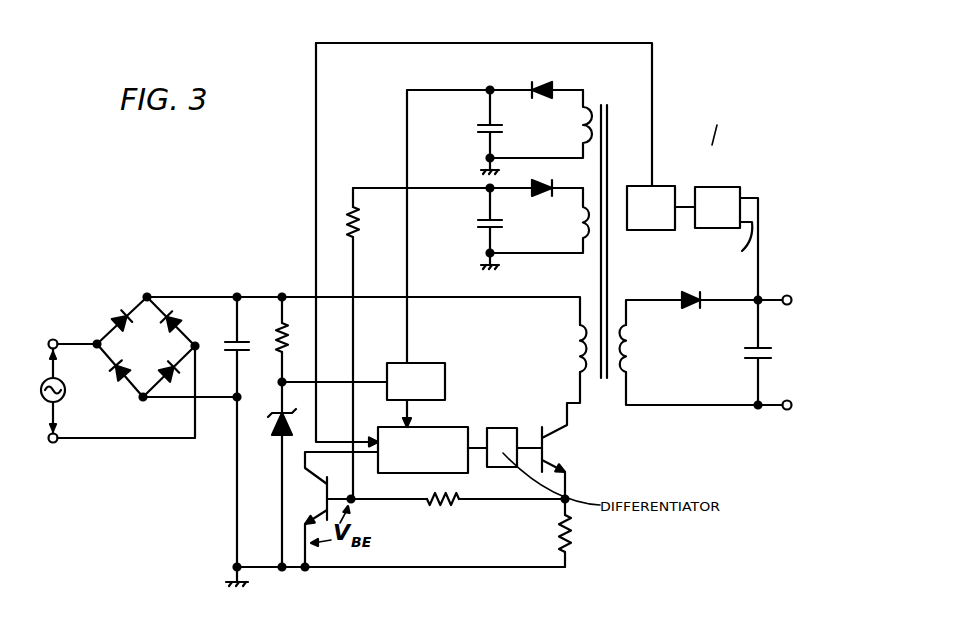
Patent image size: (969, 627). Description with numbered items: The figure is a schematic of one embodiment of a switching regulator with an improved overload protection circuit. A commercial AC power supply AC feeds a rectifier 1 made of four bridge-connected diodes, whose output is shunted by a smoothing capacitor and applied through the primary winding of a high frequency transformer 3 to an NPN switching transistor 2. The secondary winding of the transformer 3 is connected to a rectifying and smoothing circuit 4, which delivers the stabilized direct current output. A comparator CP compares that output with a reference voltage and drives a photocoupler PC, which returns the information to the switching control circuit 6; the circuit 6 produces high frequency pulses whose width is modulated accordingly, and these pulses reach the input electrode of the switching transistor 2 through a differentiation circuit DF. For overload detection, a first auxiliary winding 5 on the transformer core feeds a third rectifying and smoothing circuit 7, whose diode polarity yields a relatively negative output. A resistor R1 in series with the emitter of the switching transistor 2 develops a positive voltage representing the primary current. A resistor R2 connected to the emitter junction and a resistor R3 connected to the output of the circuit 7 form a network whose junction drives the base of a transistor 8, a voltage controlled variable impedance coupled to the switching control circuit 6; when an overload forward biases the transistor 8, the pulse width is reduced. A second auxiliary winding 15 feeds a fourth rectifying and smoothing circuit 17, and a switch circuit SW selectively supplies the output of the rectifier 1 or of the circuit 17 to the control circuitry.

The rectifier 1 is at (207, 298).
The switching transistor 2 is at (560, 448).
The high frequency transformer 3 is at (600, 390).
The rectifying and smoothing circuit 4 is at (713, 390).
The first auxiliary winding 5 is at (583, 238).
The switching control circuit 6 is at (441, 430).
The third rectifying and smoothing circuit 7 is at (530, 243).
The transistor 8 is at (305, 497).
The second auxiliary winding 15 is at (590, 107).
The fourth rectifying and smoothing circuit 17 is at (520, 107).
The commercial AC power supply AC is at (65, 391).
The resistor R1 is at (573, 530).
The resistor R2 is at (433, 506).
The resistor R3 is at (359, 214).
The switch circuit SW is at (412, 363).
The differentiation circuit DF is at (508, 430).
The photocoupler PC is at (664, 190).
The comparator CP is at (727, 190).